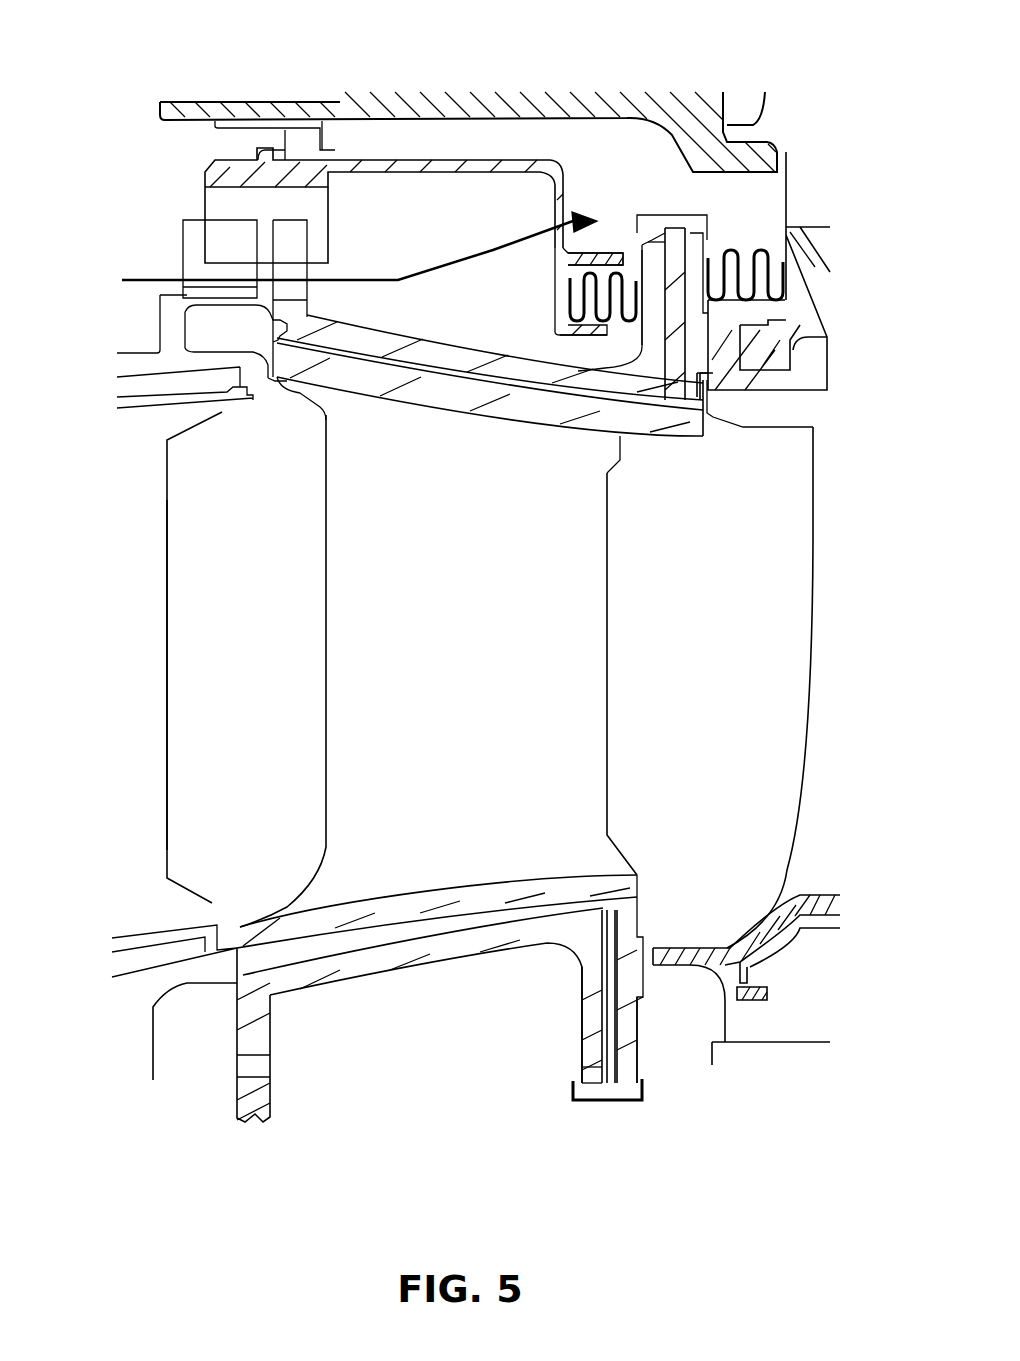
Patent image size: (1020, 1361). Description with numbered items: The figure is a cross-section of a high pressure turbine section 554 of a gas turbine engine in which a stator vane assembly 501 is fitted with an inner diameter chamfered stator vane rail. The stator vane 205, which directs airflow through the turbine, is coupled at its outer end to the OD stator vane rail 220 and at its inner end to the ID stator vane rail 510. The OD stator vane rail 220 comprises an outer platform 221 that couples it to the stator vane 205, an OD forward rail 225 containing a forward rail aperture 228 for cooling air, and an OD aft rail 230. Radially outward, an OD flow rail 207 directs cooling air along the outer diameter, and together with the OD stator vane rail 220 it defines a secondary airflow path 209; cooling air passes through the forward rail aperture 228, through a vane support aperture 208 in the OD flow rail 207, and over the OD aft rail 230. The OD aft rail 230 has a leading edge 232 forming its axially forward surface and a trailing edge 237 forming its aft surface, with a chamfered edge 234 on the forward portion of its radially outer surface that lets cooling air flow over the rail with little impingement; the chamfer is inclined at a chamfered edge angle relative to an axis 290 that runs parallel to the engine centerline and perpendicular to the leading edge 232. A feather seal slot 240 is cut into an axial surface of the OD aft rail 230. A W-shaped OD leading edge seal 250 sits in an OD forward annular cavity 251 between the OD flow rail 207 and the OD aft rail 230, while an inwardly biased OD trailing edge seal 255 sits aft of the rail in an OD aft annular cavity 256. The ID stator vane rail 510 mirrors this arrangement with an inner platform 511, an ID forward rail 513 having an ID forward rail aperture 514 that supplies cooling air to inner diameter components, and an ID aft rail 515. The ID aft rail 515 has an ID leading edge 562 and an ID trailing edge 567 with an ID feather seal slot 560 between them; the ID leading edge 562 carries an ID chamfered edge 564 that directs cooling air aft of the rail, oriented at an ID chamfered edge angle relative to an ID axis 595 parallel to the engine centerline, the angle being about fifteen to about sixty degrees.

The turbine section assembly 554 is at (105, 80).
The stator vane 205 is at (362, 637).
The OD flow rail 207 is at (405, 170).
The vane support aperture 208 is at (558, 213).
The secondary airflow path 209 is at (158, 280).
The OD stator vane rail 220 is at (292, 393).
The outer platform 221 is at (598, 420).
The OD forward rail 225 is at (277, 310).
The forward rail aperture 228 is at (287, 297).
The OD aft rail 230 is at (675, 258).
The leading edge 232 is at (600, 263).
The chamfered edge 234 is at (650, 240).
The trailing edge 237 is at (712, 256).
The feather seal slot 240 is at (690, 265).
The OD leading edge seal 250 is at (566, 283).
The OD forward annular cavity 251 is at (588, 305).
The OD trailing edge seal 255 is at (782, 255).
The OD aft annular cavity 256 is at (745, 280).
The axis 290 is at (640, 245).
The stator vane assembly 501 is at (167, 665).
The ID stator vane rail 510 is at (258, 895).
The inner platform 511 is at (570, 890).
The ID forward rail 513 is at (252, 1012).
The ID forward rail aperture 514 is at (255, 1065).
The ID aft rail 515 is at (622, 1103).
The ID feather seal slot 560 is at (610, 992).
The ID leading edge 562 is at (583, 990).
The ID chamfered edge 564 is at (575, 1093).
The ID trailing edge 567 is at (640, 1032).
The ID axis 595 is at (590, 1067).